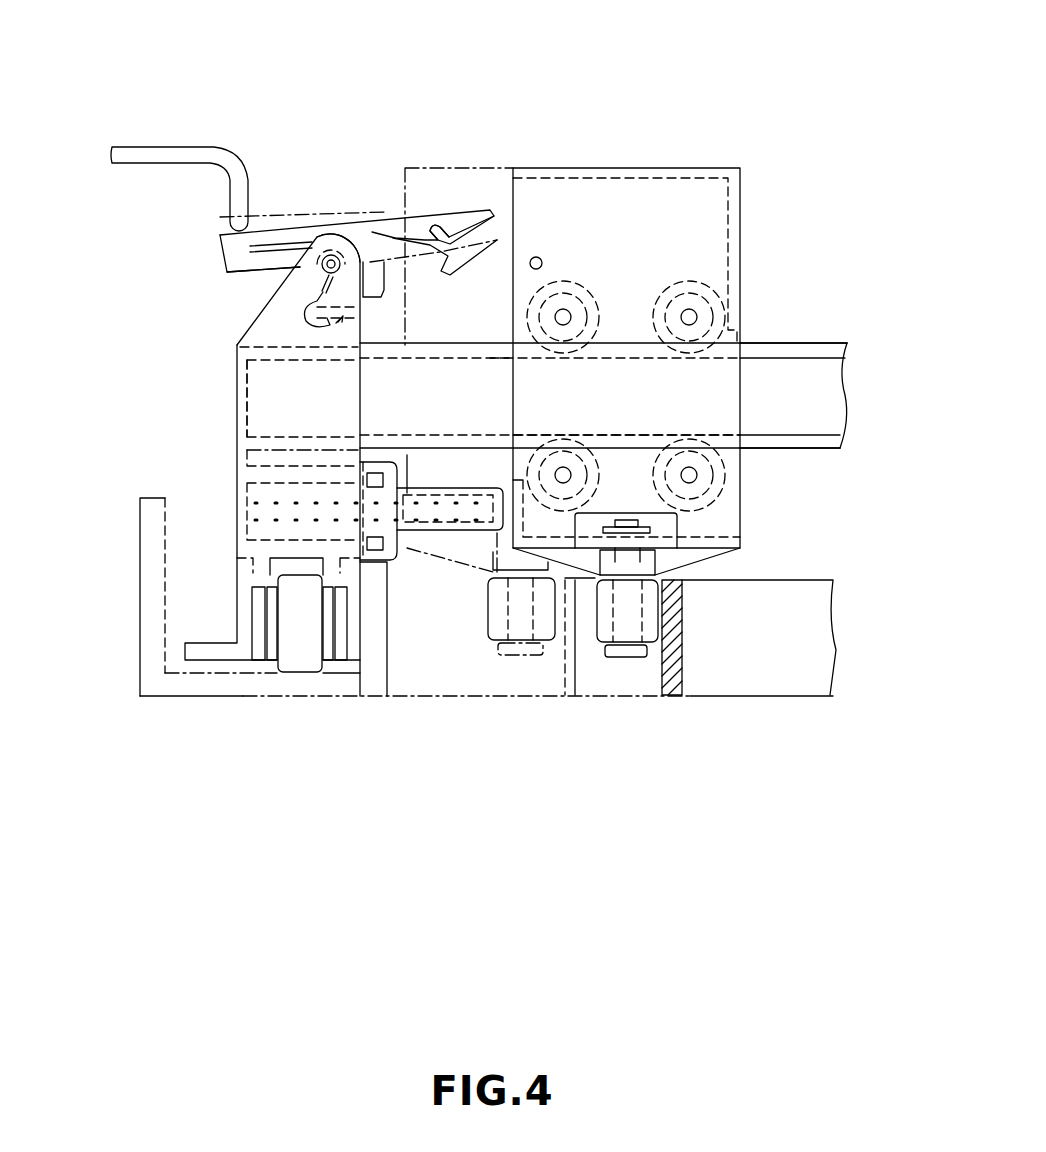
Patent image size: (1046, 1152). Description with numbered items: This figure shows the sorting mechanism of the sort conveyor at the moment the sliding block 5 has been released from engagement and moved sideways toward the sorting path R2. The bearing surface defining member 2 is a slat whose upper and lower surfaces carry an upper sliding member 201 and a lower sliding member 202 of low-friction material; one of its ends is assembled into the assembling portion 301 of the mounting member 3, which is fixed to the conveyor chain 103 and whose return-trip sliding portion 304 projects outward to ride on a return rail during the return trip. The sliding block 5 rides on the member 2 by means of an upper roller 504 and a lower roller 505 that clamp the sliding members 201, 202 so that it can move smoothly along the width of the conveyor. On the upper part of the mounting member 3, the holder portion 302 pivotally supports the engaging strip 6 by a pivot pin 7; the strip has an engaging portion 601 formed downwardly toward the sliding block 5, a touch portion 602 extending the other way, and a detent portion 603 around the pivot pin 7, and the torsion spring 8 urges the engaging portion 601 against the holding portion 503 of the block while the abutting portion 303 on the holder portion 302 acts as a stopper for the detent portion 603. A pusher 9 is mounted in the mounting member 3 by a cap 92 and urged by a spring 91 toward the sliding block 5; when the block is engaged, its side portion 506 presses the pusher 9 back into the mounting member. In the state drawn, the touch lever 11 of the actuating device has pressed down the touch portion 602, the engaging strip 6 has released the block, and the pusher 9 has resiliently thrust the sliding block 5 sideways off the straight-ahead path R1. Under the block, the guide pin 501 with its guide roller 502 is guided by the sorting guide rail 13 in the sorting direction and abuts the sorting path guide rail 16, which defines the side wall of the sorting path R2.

The bearing surface defining member 2 is at (833, 402).
The upper sliding member 201 is at (830, 345).
The lower sliding member 202 is at (805, 448).
The mounting member 3 is at (240, 457).
The assembling portion 301 is at (253, 403).
The holder portion 302 is at (297, 267).
The abutting portion 303 is at (343, 318).
The return-trip sliding portion 304 is at (187, 632).
The sliding block 5 is at (722, 168).
The guide pin 501 is at (633, 655).
The guide roller 502 is at (597, 622).
The holding portion 503 is at (542, 260).
The upper roller 504 is at (712, 305).
The lower roller 505 is at (722, 483).
The side portion 506 is at (497, 530).
The engaging strip 6 is at (328, 225).
The engaging portion 601 is at (430, 232).
The touch portion 602 is at (268, 236).
The detent portion 603 is at (383, 295).
The pivot pin 7 is at (328, 257).
The torsion spring 8 is at (235, 268).
The pusher 9 is at (448, 532).
The spring 91 is at (267, 520).
The cap 92 is at (387, 562).
The conveyor chain 103 is at (293, 660).
The touch lever 11 is at (168, 148).
The sorting guide rail 13 is at (805, 648).
The sorting path guide rail 16 is at (683, 657).
The straight-ahead path R1 is at (522, 660).
The sorting path R2 is at (623, 662).